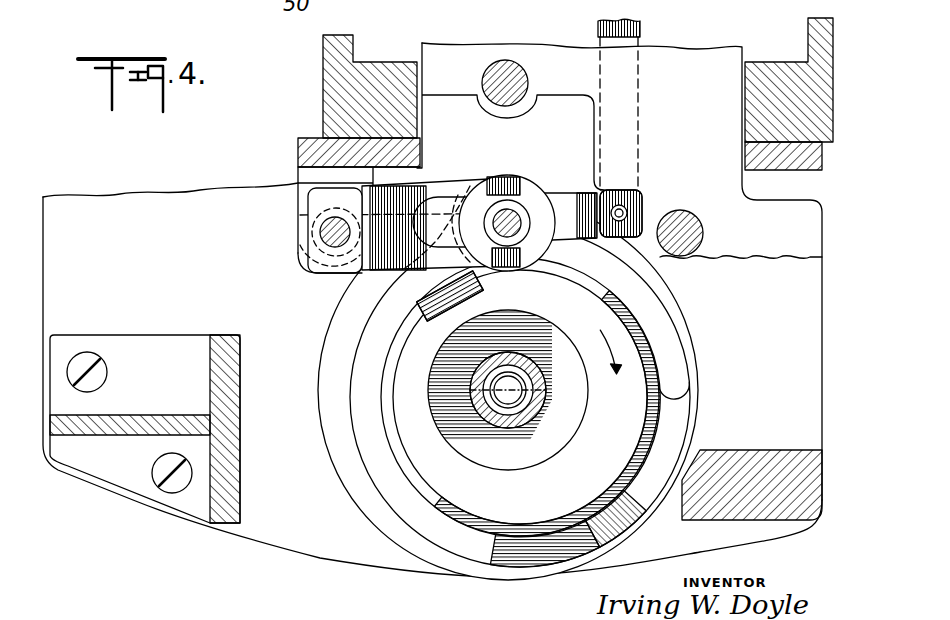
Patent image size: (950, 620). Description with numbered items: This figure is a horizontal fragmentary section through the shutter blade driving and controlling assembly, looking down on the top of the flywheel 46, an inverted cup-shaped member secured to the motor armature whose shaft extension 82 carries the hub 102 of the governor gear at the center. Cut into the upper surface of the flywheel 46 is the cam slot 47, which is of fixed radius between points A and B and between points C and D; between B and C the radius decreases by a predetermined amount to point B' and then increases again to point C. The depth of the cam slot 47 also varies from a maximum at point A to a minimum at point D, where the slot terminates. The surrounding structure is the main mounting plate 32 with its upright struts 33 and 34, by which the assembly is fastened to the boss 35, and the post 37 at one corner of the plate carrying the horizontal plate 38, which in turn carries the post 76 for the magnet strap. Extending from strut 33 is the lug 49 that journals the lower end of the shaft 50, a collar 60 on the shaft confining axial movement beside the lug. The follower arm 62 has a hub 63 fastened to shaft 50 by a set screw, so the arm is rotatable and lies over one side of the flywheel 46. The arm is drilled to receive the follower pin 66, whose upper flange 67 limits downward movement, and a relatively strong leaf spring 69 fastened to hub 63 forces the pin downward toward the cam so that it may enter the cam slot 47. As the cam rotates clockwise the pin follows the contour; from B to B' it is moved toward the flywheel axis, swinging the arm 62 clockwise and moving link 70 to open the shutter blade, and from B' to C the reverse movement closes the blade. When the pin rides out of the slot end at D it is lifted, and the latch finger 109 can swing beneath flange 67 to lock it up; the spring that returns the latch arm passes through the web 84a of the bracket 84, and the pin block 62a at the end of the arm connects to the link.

The main mounting plate 32 is at (262, 535).
The upright strut 33 is at (315, 150).
The upright strut 34 is at (778, 152).
The boss 35 is at (355, 50).
The post 37 is at (770, 460).
The horizontal plate 38 is at (712, 60).
The flywheel 46 is at (318, 430).
The cam slot 47 is at (655, 330).
The lug 49 is at (300, 182).
The shaft 50 is at (322, 231).
The collar 60 is at (306, 203).
The follower arm 62 is at (563, 198).
The pin block 62a is at (600, 242).
The hub 63 is at (310, 271).
The follower pin 66 is at (528, 248).
The flange 67 is at (527, 186).
The leaf spring 69 is at (447, 186).
The link 70 is at (640, 33).
The post 76 is at (490, 76).
The armature shaft extension 82 is at (505, 392).
The bracket 84 is at (240, 397).
The web 84a is at (130, 425).
The hub 102 is at (522, 370).
The latch finger 109 is at (476, 292).
The point A is at (672, 388).
The point B is at (408, 330).
The point B' is at (397, 389).
The point C is at (388, 490).
The point D is at (618, 490).